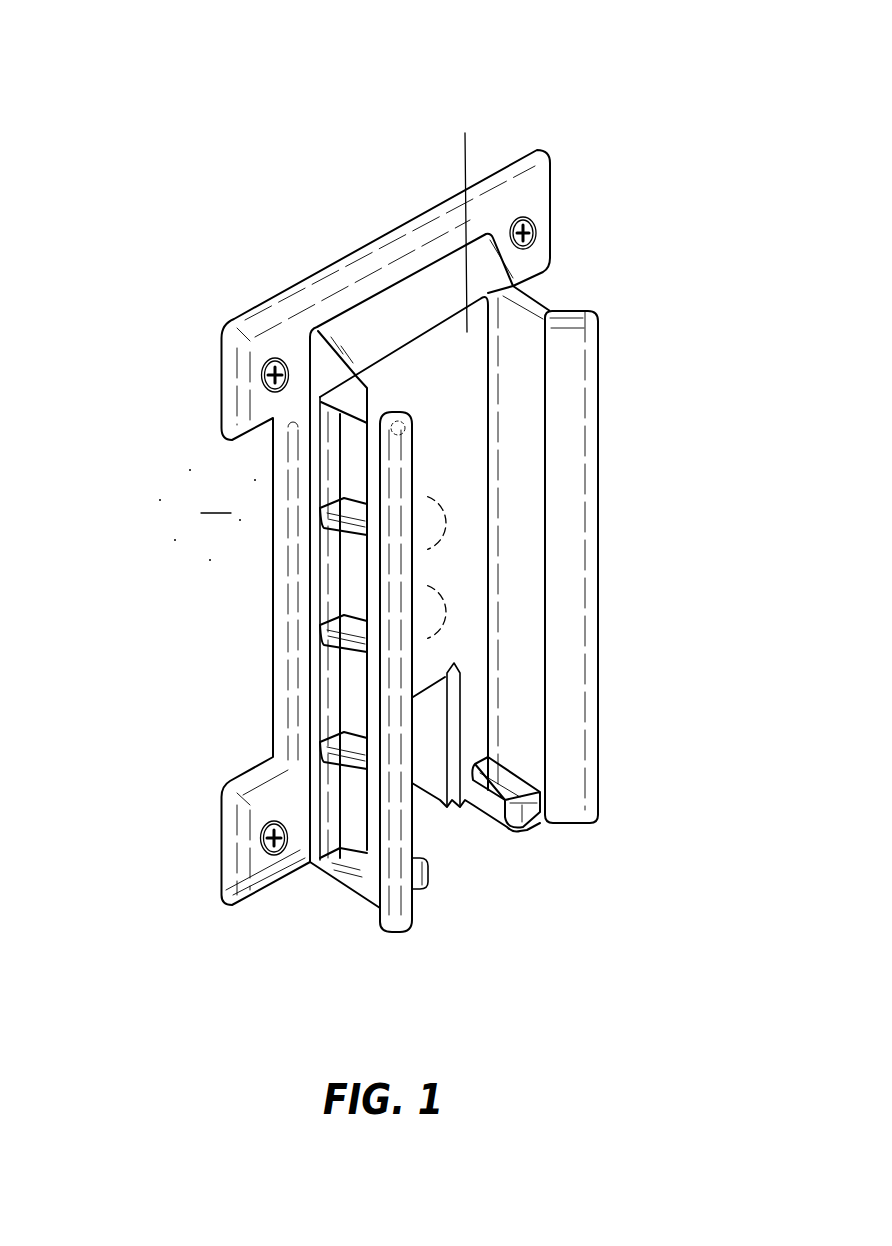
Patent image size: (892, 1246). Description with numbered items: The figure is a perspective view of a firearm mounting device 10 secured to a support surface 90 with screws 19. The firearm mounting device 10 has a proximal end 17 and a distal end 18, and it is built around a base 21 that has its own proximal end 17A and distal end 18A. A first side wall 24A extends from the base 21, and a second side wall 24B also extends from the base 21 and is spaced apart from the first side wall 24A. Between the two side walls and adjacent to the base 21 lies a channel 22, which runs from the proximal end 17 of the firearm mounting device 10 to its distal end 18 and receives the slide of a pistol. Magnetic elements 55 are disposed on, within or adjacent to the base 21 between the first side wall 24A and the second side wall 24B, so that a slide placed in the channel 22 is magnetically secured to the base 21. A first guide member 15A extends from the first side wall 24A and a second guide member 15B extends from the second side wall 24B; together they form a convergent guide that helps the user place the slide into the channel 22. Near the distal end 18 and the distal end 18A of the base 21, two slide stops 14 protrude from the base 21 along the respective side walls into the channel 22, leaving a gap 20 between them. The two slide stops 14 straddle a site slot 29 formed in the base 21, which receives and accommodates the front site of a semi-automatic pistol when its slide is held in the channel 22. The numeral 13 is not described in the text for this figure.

The firearm mounting device 10 is at (227, 371).
The bracket body corner 13 is at (359, 371).
The slide stops 14 is at (427, 872).
The first guide member 15A is at (397, 931).
The second guide member 15B is at (572, 458).
The proximal end 17 is at (522, 158).
The proximal end of the base 17A is at (446, 345).
The distal end 18 is at (228, 880).
The distal end of the base 18A is at (475, 750).
The screws 19 is at (262, 834).
The gap 20 is at (435, 832).
The base 21 is at (363, 368).
The channel 22 is at (410, 365).
The first side wall 24A is at (381, 606).
The second side wall 24B is at (520, 355).
The site slot 29 is at (433, 728).
The magnetic elements 55 is at (433, 602).
The support surface 90 is at (207, 515).